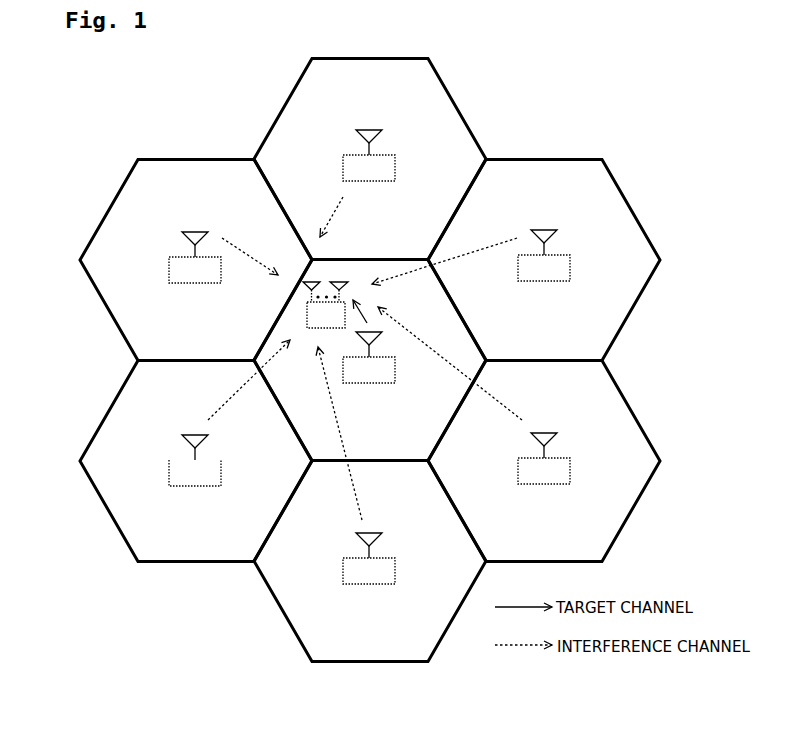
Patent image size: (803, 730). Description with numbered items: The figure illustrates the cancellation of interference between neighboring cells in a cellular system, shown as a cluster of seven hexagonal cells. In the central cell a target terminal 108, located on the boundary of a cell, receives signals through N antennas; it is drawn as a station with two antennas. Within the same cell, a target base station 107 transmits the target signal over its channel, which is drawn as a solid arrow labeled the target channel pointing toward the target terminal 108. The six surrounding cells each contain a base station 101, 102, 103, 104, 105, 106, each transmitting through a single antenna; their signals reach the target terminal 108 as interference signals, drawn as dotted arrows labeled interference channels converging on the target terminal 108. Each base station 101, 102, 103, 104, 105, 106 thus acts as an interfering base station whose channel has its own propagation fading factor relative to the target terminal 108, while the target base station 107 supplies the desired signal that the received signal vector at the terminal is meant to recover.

The base station (neighboring cell) 101 is at (207, 230).
The base station (neighboring cell) 102 is at (377, 132).
The base station (neighboring cell) 103 is at (213, 458).
The base station (neighboring cell) 104 is at (558, 254).
The base station (neighboring cell) 105 is at (388, 558).
The base station (neighboring cell) 106 is at (563, 457).
The target base station 107 is at (396, 358).
The target terminal 108 is at (333, 277).